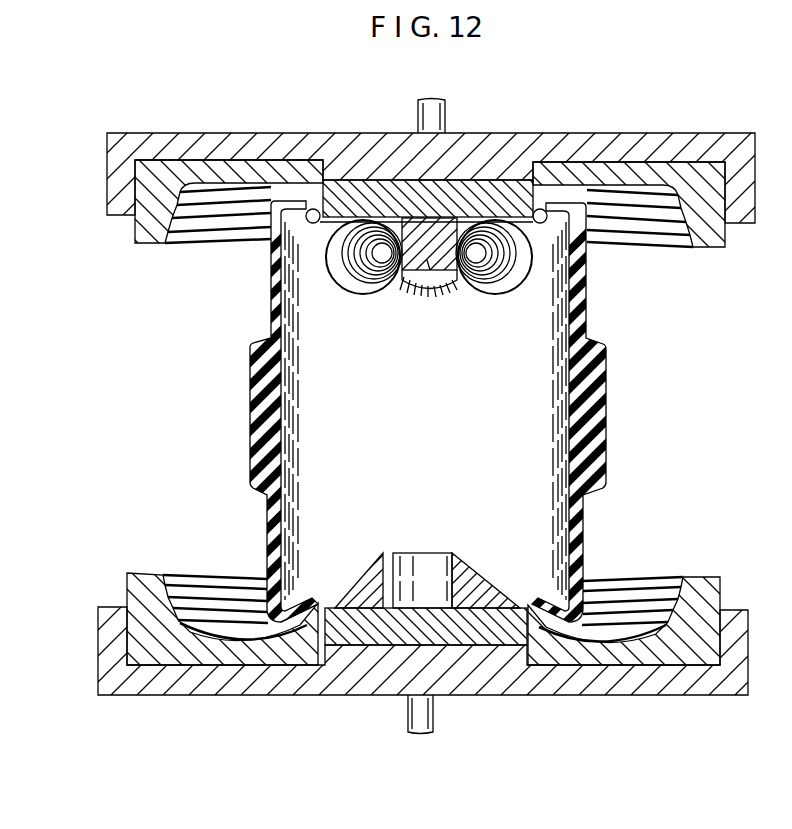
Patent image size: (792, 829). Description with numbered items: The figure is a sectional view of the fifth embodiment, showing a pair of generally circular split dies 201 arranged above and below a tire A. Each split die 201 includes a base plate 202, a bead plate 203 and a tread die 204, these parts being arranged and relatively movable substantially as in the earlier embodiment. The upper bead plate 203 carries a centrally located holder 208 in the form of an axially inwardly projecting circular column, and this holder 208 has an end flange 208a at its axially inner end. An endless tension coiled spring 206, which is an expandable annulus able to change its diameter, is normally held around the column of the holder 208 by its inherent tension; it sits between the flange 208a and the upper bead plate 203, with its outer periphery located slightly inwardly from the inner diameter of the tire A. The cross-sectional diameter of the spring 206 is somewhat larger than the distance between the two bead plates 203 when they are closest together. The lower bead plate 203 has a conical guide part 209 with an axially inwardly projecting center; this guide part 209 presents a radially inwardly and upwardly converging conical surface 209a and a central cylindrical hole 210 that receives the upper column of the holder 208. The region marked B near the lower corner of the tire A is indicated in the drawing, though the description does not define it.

The split dies 201 is at (197, 131).
The base plate 202 is at (112, 203).
The bead plate 203 is at (350, 190).
The tread die 204 is at (155, 235).
The endless tension coiled spring 206 is at (345, 290).
The holder 208 is at (438, 283).
The end flange 208a is at (395, 293).
The conical guide part 209 is at (477, 567).
The conical surface 209a is at (367, 578).
The central cylindrical hole 210 is at (427, 562).
The tire A is at (250, 412).
The bottom flange corner B is at (300, 602).